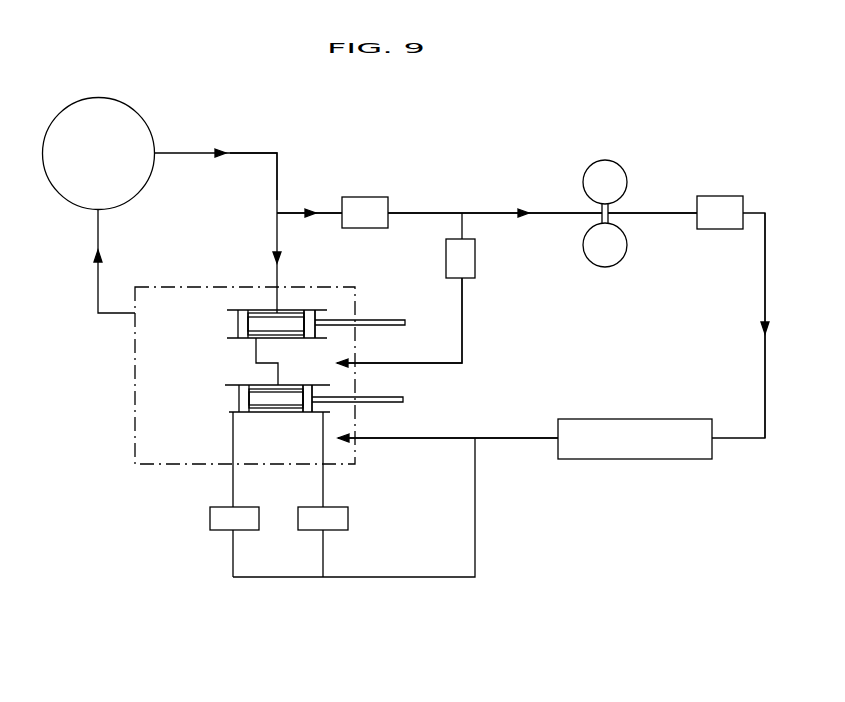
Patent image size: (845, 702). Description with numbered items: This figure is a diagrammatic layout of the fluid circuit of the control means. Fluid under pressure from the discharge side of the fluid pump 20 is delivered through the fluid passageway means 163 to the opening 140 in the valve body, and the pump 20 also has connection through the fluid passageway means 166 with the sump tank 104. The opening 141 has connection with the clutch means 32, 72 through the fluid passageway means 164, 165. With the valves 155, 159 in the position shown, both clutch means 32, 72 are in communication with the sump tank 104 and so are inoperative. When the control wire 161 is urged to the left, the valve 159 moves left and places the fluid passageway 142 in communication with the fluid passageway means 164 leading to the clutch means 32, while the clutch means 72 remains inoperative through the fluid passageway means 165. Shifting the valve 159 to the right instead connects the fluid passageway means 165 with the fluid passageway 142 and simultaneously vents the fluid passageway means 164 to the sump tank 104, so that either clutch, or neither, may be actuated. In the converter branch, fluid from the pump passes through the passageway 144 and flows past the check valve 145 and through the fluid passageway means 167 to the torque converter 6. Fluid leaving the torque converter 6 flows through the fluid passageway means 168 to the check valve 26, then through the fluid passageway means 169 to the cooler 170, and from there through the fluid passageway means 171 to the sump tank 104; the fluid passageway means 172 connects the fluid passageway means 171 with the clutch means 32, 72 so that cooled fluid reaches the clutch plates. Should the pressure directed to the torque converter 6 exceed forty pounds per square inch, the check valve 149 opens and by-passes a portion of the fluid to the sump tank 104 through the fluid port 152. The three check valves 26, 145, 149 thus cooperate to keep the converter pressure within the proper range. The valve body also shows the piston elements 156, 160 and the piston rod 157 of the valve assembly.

The fluid pump 20 is at (150, 122).
The fluid passageway means 163 is at (244, 153).
The fluid passageway means 166 is at (98, 232).
The line 144 is at (318, 212).
The check valve 145 is at (376, 197).
The fluid passageway means 167 is at (478, 212).
The torque converter 6 is at (626, 162).
The fluid passageway means 168 is at (652, 212).
The check valve 26 is at (722, 196).
The fluid passageway means 169 is at (766, 263).
The check valve 149 is at (476, 268).
The fluid port 152 is at (463, 315).
The cooler 170 is at (646, 459).
The fluid passageway means 171 is at (432, 439).
The fluid passageway means 172 is at (476, 533).
The sump tank 104 is at (135, 443).
The opening 140 is at (263, 309).
The valve 155 is at (313, 310).
The piston 156 is at (283, 327).
The piston rod 157 is at (388, 320).
The fluid passageway 142 is at (256, 350).
The opening 141 is at (270, 412).
The valve 159 is at (310, 396).
The piston 160 is at (288, 402).
The control wire 161 is at (403, 402).
The fluid passageway means 164 is at (233, 488).
The fluid passageway means 165 is at (323, 490).
The clutch means 32 is at (213, 530).
The clutch means 72 is at (345, 530).